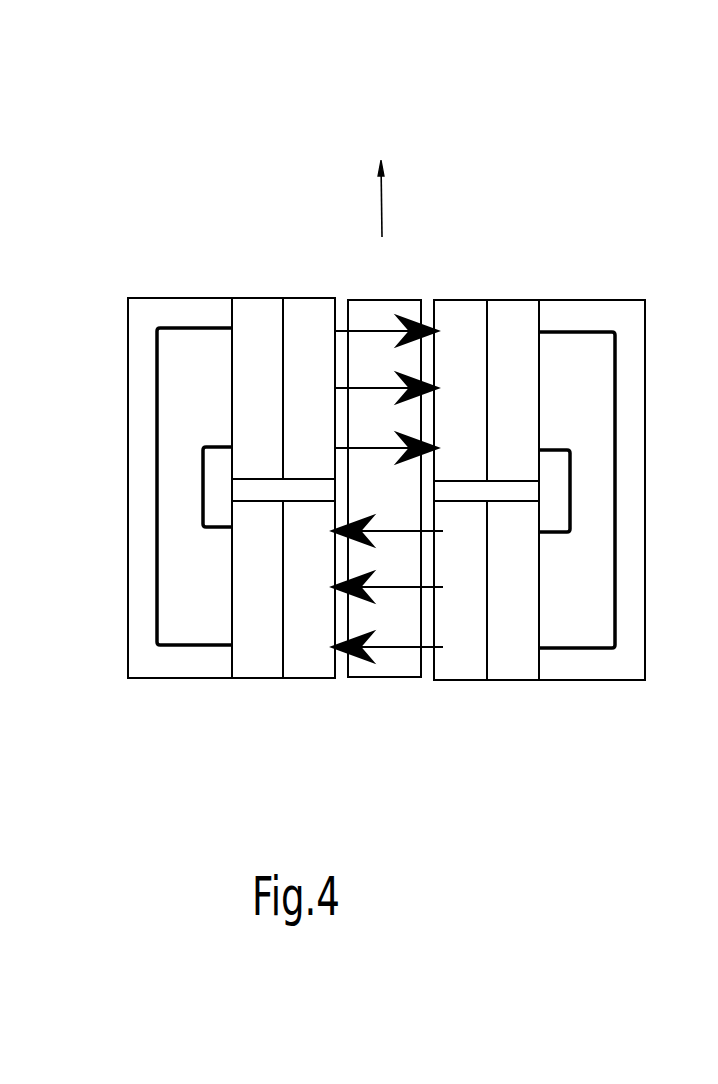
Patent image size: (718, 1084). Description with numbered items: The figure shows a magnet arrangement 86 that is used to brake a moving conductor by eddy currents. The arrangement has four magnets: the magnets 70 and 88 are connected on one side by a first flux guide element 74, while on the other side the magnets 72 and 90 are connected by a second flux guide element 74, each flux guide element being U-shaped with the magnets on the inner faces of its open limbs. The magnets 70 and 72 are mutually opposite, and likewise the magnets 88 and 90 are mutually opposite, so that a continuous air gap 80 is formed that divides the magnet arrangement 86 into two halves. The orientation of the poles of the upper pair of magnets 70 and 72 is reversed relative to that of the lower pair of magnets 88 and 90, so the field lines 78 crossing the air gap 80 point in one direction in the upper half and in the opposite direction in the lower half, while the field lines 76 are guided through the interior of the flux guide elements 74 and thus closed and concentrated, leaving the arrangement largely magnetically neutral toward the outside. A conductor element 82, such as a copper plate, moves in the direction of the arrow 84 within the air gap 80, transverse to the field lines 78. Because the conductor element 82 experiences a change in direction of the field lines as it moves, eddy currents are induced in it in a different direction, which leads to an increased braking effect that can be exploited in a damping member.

The magnet 70 is at (276, 298).
The magnet 72 is at (505, 300).
The flux guide element 74 is at (128, 372).
The field lines 76 is at (157, 602).
The field lines 78 is at (368, 327).
The air gap 80 is at (433, 672).
The conductor element 82 is at (375, 678).
The arrow 84 is at (383, 200).
The magnet arrangement 86 is at (520, 188).
The magnet 88 is at (295, 680).
The magnet 90 is at (522, 683).